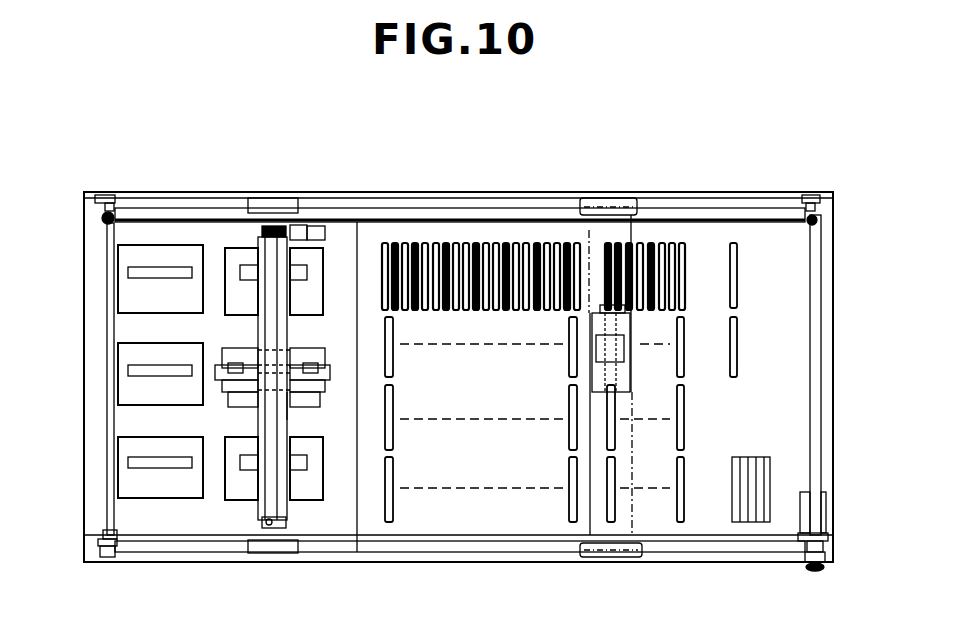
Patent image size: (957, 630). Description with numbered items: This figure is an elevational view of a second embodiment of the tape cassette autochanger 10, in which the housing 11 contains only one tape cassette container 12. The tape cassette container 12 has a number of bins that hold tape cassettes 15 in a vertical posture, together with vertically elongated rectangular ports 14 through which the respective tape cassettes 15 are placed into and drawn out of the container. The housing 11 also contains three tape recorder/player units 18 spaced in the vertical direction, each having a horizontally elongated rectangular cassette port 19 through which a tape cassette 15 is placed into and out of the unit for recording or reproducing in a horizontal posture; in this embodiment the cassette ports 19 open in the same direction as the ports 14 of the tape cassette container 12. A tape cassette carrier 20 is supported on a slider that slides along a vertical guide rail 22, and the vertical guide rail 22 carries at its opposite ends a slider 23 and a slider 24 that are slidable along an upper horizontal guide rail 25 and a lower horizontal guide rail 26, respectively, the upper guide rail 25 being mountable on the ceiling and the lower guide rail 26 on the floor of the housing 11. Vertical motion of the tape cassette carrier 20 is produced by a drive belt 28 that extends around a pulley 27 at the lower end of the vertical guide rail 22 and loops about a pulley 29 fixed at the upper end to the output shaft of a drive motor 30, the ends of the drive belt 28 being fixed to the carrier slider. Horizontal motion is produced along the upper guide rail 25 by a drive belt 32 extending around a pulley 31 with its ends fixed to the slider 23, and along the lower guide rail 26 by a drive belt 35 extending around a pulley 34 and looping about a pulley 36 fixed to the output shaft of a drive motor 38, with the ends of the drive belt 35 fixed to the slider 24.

The tape cassette autochanger 10 is at (246, 186).
The housing 11 is at (835, 383).
The tape cassette container 12 is at (582, 252).
The ports 14 is at (737, 322).
The tape cassettes 15 is at (450, 243).
The tape recorder/player units 18 is at (130, 350).
The cassette port 19 is at (130, 275).
The tape cassette carrier 20 is at (330, 370).
The vertical guide rail 22 is at (288, 416).
The slider 23 is at (270, 198).
The slider 24 is at (275, 553).
The upper horizontal guide rail 25 is at (369, 207).
The lower horizontal guide rail 26 is at (383, 553).
The pulley 27 is at (260, 522).
The drive belt 28 is at (270, 325).
The pulley 29 is at (260, 232).
The drive motor 30 is at (316, 224).
The pulley 31 is at (104, 222).
The drive belt 32 is at (680, 222).
The pulley 34 is at (104, 530).
The drive belt 35 is at (472, 537).
The pulley 36 is at (827, 538).
The drive motor 38 is at (825, 503).